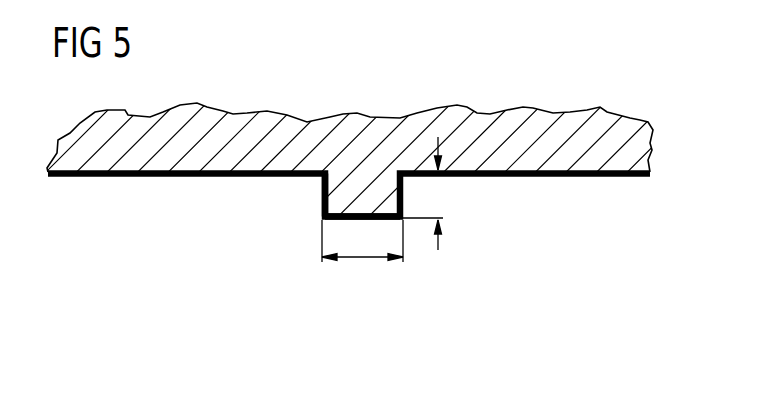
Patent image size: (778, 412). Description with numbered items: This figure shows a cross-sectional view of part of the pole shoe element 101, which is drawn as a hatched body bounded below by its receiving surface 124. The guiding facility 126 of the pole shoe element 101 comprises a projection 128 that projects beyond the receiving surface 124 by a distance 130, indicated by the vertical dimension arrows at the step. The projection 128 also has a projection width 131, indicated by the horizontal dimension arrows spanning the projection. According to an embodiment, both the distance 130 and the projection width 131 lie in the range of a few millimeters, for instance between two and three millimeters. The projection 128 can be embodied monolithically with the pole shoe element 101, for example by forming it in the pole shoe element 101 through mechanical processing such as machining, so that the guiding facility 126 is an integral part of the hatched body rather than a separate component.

The pole shoe element 101 is at (568, 128).
The receiving surface 124 is at (165, 177).
The guiding facility 126 is at (321, 197).
The projection 128 is at (340, 221).
The distance 130 is at (440, 197).
The projection width 131 is at (366, 259).